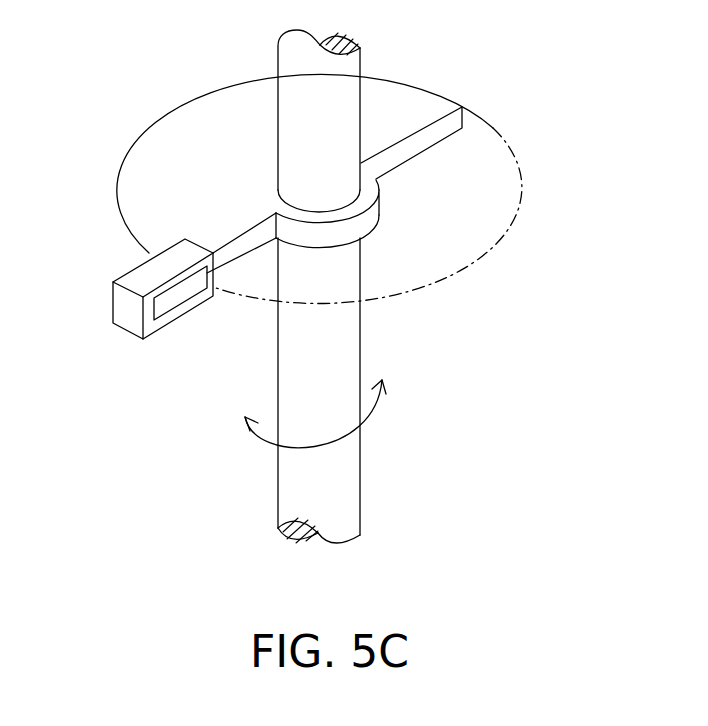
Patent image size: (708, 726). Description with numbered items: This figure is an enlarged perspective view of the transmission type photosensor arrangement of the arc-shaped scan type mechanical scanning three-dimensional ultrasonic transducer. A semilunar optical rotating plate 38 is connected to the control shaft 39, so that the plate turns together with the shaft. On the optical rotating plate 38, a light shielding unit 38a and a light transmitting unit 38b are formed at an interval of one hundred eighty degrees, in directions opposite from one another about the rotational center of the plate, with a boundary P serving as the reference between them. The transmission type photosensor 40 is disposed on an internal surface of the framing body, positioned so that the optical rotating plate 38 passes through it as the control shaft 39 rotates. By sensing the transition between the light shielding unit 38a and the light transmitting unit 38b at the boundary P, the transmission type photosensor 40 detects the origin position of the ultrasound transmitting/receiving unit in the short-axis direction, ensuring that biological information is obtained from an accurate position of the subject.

The optical rotating plate 38 is at (516, 260).
The light shielding unit 38a is at (160, 143).
The light transmitting unit 38b is at (507, 183).
The control shaft 39 is at (338, 363).
The transmission type photosensor 40 is at (133, 278).
The boundary P is at (423, 127).